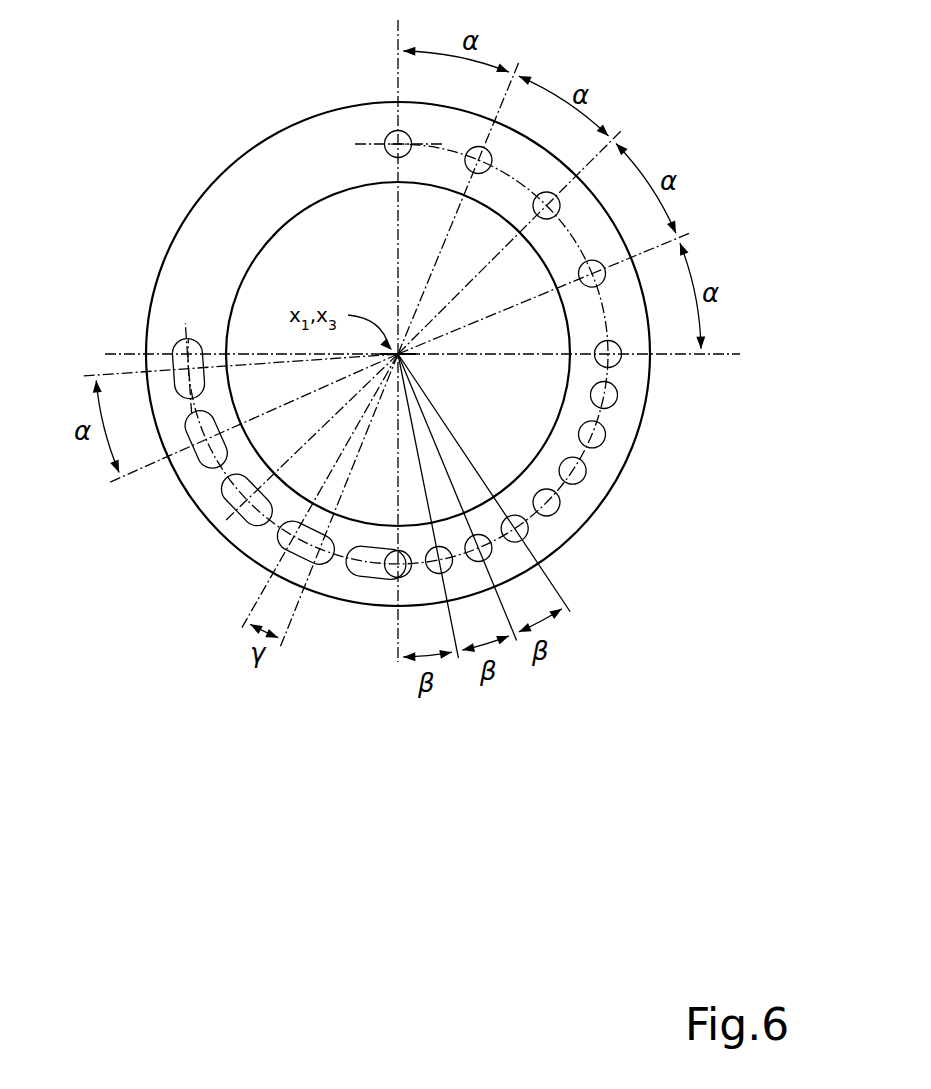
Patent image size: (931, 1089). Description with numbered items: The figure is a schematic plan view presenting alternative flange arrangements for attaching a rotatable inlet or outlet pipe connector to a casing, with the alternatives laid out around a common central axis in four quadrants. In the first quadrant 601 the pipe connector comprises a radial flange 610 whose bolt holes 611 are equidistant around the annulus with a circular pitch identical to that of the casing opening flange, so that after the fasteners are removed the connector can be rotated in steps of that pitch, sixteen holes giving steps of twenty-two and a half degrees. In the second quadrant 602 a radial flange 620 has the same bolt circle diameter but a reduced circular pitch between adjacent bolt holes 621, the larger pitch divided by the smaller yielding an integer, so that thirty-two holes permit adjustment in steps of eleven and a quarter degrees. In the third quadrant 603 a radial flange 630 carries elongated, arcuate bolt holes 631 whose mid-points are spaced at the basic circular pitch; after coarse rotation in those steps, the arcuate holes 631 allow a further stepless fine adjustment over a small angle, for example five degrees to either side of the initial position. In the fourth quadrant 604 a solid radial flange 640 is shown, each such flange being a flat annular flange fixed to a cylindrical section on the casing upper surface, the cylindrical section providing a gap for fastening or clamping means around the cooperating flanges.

The first quadrant 601 is at (676, 101).
The second quadrant 602 is at (676, 534).
The third quadrant 603 is at (170, 620).
The fourth quadrant 604 is at (170, 144).
The radial flange 610 is at (600, 197).
The bolt holes 611 is at (560, 214).
The radial flange 620 is at (563, 550).
The bolt holes 621 is at (616, 403).
The radial flange 630 is at (182, 488).
The arcuate bolt holes 631 is at (213, 462).
The solid radial flange 640 is at (275, 128).